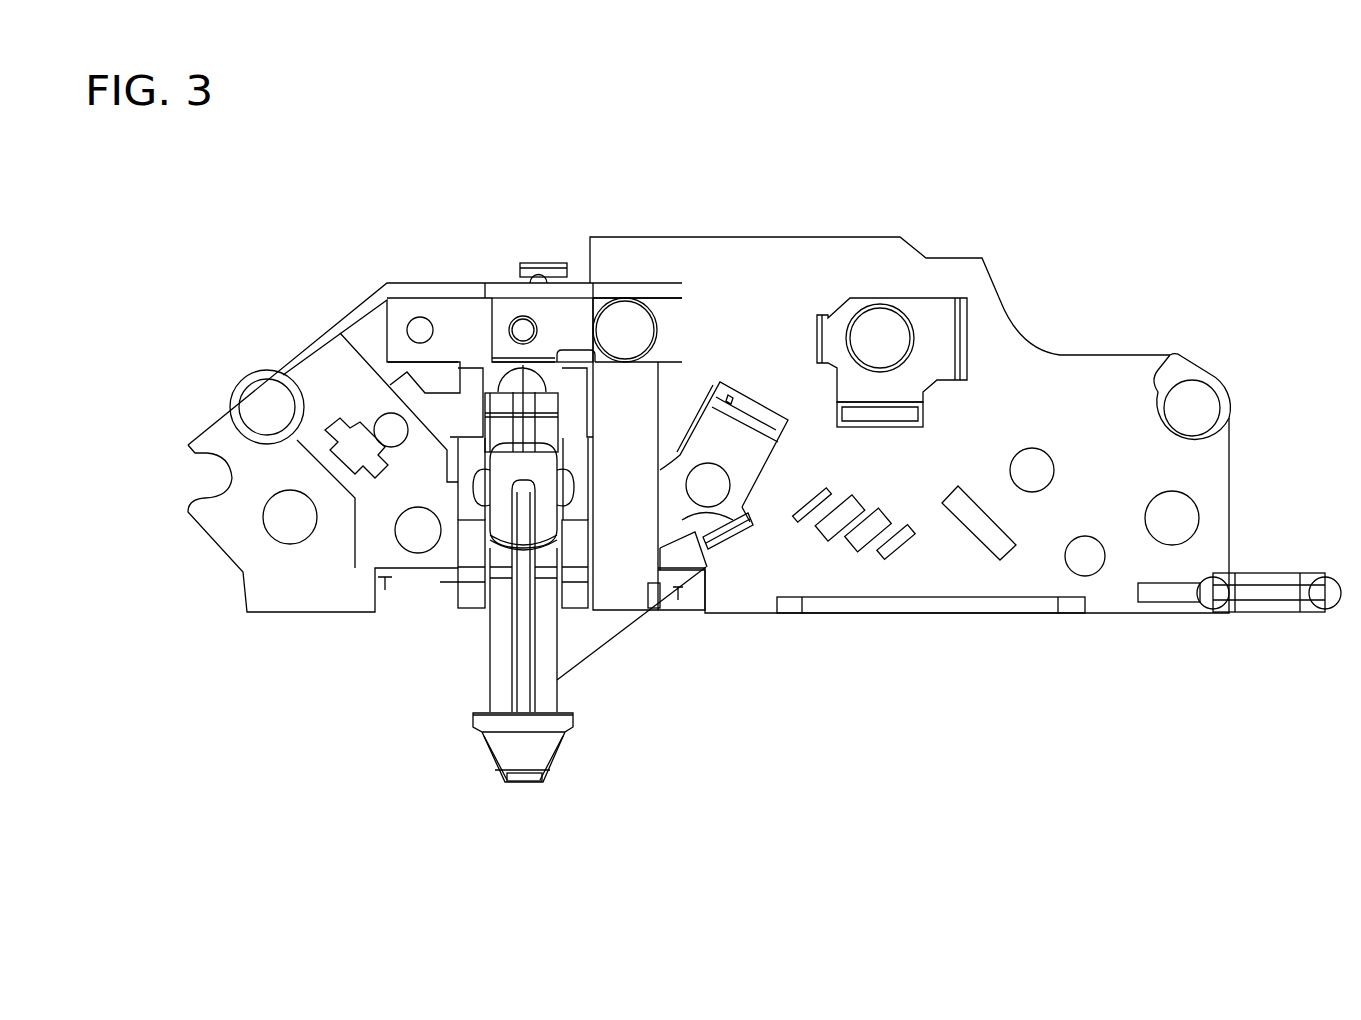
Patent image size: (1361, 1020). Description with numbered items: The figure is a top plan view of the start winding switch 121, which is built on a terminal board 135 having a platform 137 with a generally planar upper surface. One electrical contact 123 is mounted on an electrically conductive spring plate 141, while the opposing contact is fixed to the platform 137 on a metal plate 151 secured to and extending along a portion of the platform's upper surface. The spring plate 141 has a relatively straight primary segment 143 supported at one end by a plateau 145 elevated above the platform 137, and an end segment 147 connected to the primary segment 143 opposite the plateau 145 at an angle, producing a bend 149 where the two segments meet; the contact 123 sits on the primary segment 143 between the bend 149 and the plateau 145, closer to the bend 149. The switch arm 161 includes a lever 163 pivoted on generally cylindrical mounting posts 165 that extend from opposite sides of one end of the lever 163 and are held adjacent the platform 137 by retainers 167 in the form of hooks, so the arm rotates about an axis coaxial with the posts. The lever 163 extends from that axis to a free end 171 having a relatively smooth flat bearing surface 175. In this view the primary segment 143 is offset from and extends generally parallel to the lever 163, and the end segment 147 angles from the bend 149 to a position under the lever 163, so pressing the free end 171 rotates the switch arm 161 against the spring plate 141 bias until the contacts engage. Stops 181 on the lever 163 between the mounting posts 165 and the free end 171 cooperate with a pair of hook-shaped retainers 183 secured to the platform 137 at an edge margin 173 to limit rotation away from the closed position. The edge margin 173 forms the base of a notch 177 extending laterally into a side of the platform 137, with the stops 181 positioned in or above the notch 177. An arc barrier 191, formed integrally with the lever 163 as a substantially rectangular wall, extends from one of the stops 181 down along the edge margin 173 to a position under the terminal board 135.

The start winding switch 121 is at (1190, 217).
The electrical contact 123 is at (680, 595).
The terminal board 135 is at (1218, 355).
The platform 137 is at (940, 567).
The spring plate 141 is at (651, 428).
The primary segment 143 is at (622, 392).
The plateau 145 is at (660, 388).
The end segment 147 is at (565, 655).
The bend 149 is at (620, 622).
The metal plate 151 is at (747, 537).
The switch arm 161 is at (466, 660).
The lever 163 is at (517, 683).
The mounting posts 165 is at (470, 383).
The retainers 167 is at (547, 378).
The free end 171 is at (510, 785).
The edge margin 173 is at (403, 577).
The bearing surface 175 is at (517, 760).
The notch 177 is at (385, 580).
The stops 181 is at (413, 593).
The retainers 183 is at (580, 551).
The arc barrier 191 is at (557, 627).